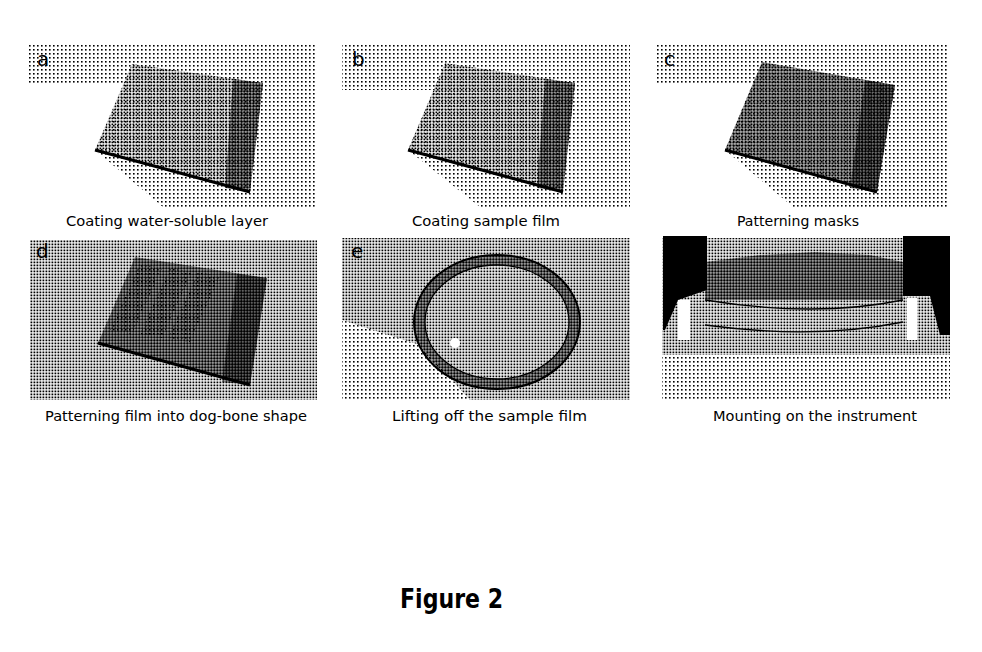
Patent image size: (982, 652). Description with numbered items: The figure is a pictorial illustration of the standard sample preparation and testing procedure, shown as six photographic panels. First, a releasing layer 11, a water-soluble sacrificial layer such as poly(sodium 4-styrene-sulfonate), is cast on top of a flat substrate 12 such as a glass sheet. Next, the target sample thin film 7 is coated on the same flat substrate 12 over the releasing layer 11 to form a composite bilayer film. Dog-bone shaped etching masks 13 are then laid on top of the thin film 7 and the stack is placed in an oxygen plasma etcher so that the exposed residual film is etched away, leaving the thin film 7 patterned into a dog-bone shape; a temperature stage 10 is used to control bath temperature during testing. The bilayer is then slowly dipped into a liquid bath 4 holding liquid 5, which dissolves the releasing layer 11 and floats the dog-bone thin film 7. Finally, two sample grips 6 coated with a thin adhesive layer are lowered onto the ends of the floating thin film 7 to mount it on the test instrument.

The liquid bath 4 is at (423, 292).
The liquid 5 is at (572, 342).
The sample grips 6 is at (747, 258).
The thin film 7 is at (483, 107).
The temperature stage 10 is at (247, 312).
The releasing layer 11 is at (167, 117).
The flat substrate 12 is at (87, 150).
The dog-bone shaped etching masks 13 is at (760, 108).